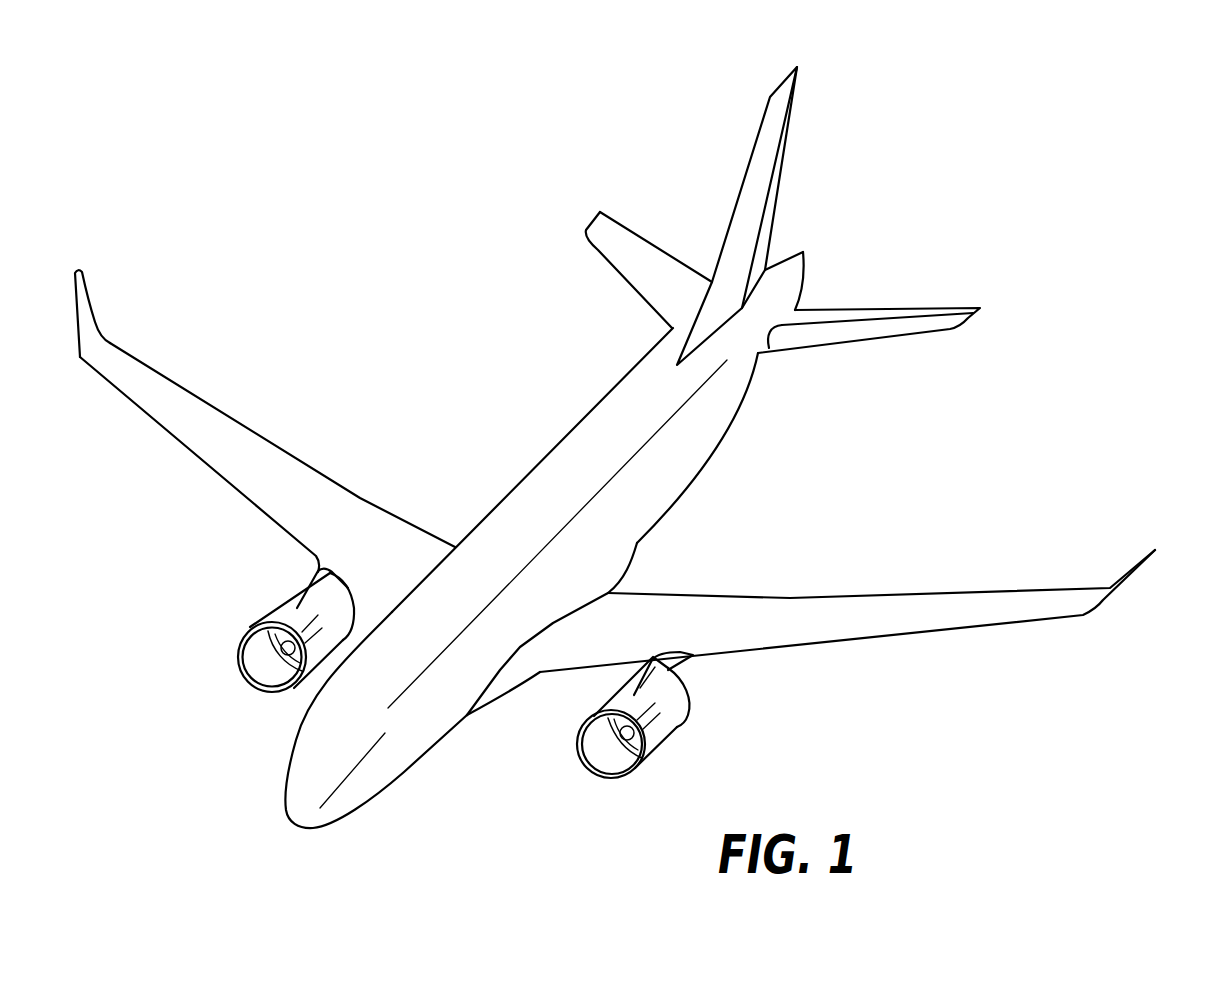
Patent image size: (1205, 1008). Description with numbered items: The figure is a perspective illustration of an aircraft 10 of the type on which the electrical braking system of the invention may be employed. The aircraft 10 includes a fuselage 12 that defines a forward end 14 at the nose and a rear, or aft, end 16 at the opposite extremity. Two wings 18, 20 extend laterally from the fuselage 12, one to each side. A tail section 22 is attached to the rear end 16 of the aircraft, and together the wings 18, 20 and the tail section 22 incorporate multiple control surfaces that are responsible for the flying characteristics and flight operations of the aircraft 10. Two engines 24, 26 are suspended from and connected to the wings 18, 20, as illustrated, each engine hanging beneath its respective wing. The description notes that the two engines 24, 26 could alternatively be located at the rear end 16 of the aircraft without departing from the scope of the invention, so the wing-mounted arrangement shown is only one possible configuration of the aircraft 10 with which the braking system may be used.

The aircraft 10 is at (615, 452).
The fuselage 12 is at (682, 475).
The forward end 14 is at (290, 820).
The rear end 16 is at (805, 250).
The wing 18 is at (807, 612).
The wing 20 is at (290, 467).
The tail section 22 is at (765, 204).
The engine 24 is at (667, 725).
The engine 26 is at (278, 620).